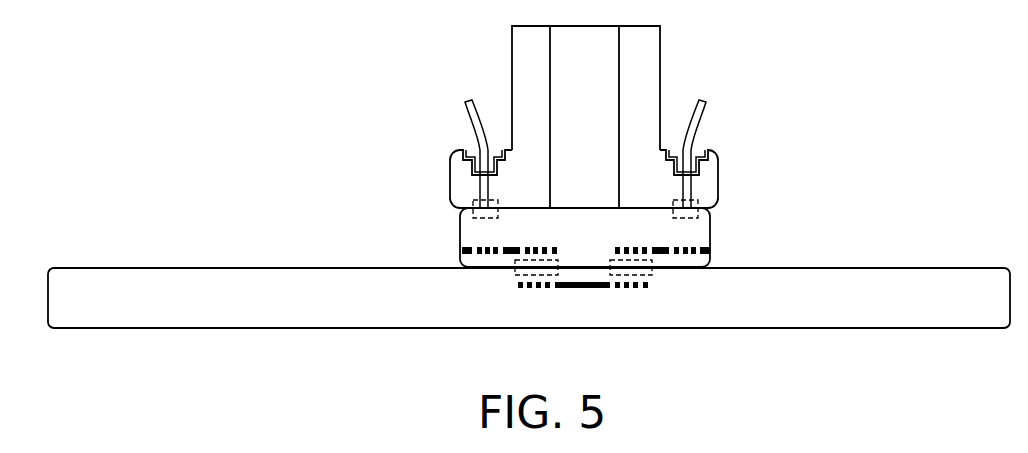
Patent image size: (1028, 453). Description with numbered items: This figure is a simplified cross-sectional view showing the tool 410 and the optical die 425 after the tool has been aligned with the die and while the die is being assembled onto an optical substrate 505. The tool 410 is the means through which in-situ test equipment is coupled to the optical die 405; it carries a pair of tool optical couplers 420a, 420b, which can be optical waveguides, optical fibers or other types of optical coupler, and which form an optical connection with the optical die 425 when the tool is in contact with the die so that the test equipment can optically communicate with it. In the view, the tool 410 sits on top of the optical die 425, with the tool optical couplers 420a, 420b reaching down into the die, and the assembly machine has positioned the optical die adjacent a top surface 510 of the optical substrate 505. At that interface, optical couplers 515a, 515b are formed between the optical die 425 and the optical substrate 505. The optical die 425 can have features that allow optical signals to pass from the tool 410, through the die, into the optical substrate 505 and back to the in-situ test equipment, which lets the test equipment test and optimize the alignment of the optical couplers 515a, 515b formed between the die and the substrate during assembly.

The optical die 405 is at (450, 167).
The tool 410 is at (661, 82).
The tool optical coupler 420a is at (475, 203).
The tool optical coupler 420b is at (698, 201).
The optical die 425 is at (460, 239).
The optical substrate 505 is at (810, 313).
The top surface 510 is at (745, 268).
The optical coupler 515a is at (517, 277).
The optical coupler 515b is at (650, 277).